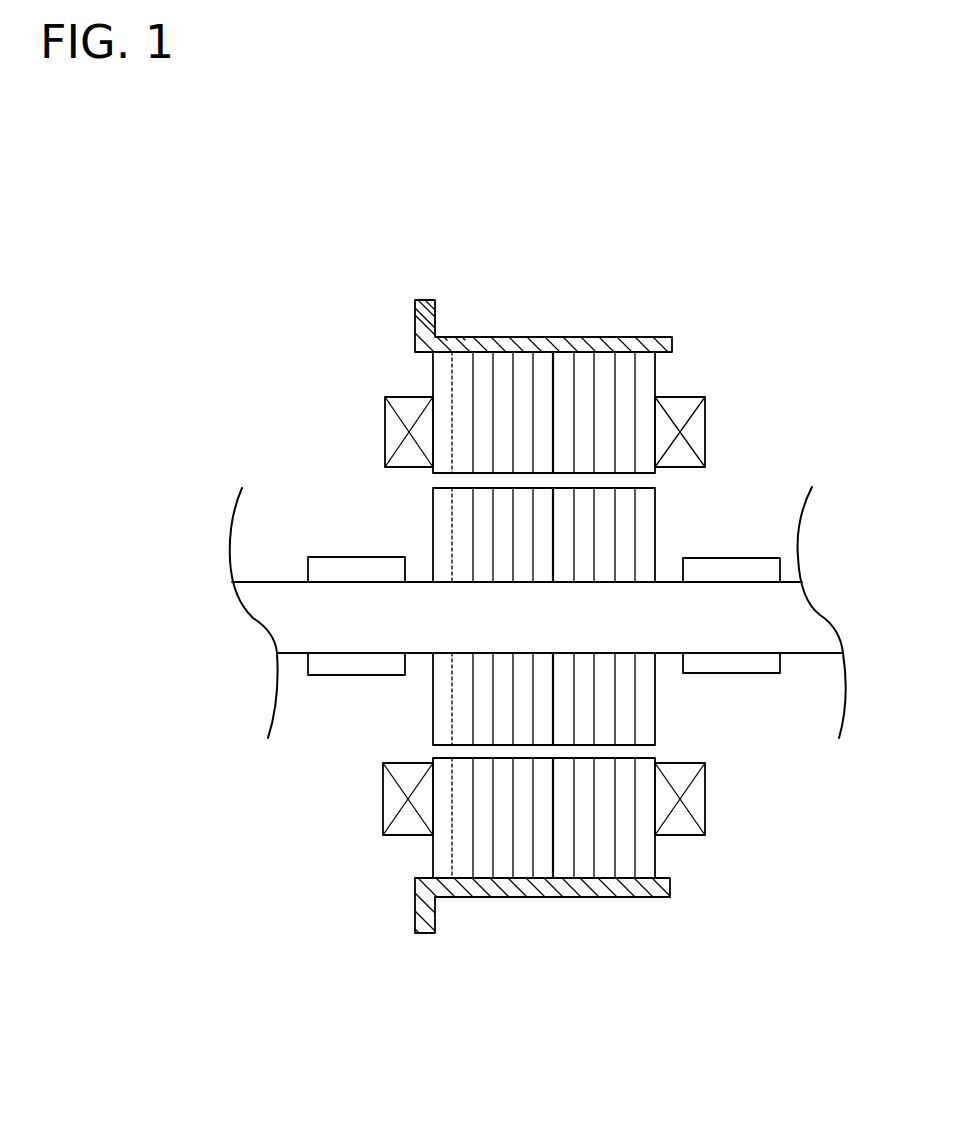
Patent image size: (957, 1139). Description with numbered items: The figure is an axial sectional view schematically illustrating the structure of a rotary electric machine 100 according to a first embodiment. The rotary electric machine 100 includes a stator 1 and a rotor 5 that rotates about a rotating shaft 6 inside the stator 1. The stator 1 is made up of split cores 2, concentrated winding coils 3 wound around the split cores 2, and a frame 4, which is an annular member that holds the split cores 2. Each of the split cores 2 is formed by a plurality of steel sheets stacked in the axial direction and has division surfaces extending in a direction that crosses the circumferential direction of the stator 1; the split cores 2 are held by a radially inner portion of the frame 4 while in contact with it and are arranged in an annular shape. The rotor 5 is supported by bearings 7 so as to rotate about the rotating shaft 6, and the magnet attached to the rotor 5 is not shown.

The rotary electric machine 100 is at (185, 233).
The stator 1 is at (292, 275).
The split cores 2 is at (438, 383).
The concentrated winding coils 3 is at (397, 432).
The frame 4 is at (418, 325).
The rotor 5 is at (443, 543).
The rotating shaft 6 is at (802, 613).
The bearings 7 is at (708, 568).